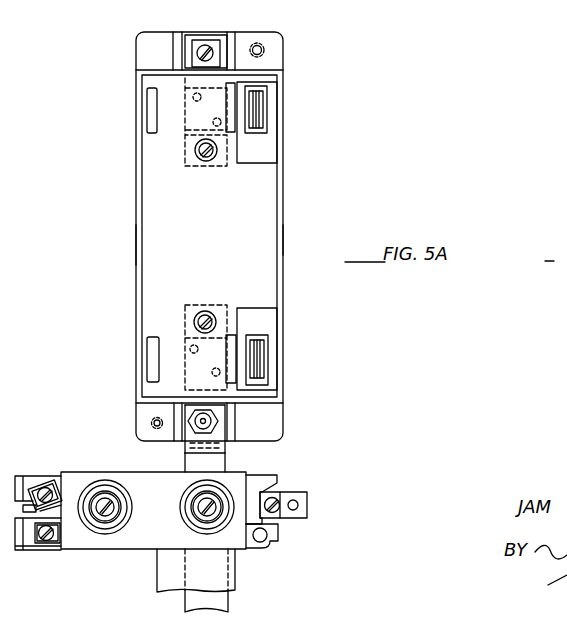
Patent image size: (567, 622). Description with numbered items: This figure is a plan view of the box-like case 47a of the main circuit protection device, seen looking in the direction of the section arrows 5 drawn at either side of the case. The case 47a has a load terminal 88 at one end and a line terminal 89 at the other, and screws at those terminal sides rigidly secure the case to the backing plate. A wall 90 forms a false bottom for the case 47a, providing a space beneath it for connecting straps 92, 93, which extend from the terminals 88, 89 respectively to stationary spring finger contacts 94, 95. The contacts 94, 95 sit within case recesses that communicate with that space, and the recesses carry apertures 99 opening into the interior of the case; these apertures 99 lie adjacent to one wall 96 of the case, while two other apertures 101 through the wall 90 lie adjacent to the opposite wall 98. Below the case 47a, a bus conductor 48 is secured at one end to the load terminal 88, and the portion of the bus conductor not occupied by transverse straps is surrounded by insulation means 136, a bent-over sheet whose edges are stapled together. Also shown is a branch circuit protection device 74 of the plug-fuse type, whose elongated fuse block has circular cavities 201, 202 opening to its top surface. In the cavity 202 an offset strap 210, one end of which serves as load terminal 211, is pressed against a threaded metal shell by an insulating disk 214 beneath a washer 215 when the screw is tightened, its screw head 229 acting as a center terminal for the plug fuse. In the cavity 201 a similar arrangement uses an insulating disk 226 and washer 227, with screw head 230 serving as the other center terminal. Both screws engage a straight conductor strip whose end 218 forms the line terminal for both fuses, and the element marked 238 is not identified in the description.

The section arrows 5 is at (131, 358).
The box-like case 47a is at (284, 239).
The bus conductor 48 is at (222, 462).
The circuit protection device 74 is at (108, 553).
The load terminal 88 is at (184, 445).
The line terminal 89 is at (217, 34).
The wall 90 is at (256, 208).
The connecting strap 92 is at (222, 282).
The connecting strap 93 is at (208, 167).
The stationary spring finger contact 94 is at (265, 372).
The stationary spring finger contact 95 is at (262, 108).
The wall 96 is at (284, 184).
The wall 98 is at (137, 239).
The aperture 99 is at (256, 138).
The aperture 101 is at (150, 134).
The insulation means 136 is at (237, 586).
The circular cavity 201 is at (200, 520).
The circular cavity 202 is at (127, 485).
The offset strap 210 is at (42, 544).
The load terminal 211 is at (45, 485).
The insulating disk 214 is at (108, 524).
The washer 215 is at (103, 512).
The line terminal 218 is at (298, 491).
The insulating disk 226 is at (226, 503).
The washer 227 is at (222, 519).
The screw head 229 is at (124, 504).
The screw head 230 is at (208, 516).
The lug hole 238 is at (298, 505).